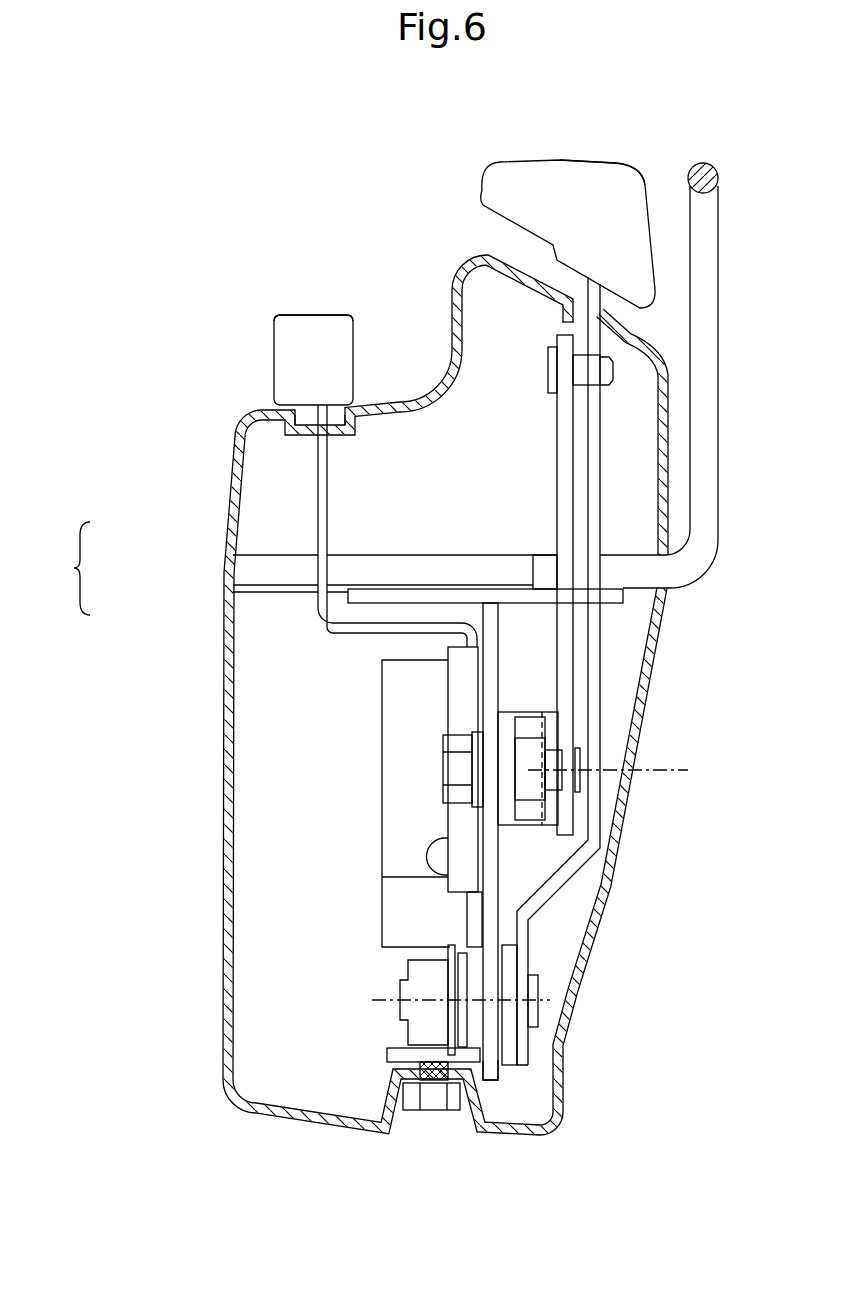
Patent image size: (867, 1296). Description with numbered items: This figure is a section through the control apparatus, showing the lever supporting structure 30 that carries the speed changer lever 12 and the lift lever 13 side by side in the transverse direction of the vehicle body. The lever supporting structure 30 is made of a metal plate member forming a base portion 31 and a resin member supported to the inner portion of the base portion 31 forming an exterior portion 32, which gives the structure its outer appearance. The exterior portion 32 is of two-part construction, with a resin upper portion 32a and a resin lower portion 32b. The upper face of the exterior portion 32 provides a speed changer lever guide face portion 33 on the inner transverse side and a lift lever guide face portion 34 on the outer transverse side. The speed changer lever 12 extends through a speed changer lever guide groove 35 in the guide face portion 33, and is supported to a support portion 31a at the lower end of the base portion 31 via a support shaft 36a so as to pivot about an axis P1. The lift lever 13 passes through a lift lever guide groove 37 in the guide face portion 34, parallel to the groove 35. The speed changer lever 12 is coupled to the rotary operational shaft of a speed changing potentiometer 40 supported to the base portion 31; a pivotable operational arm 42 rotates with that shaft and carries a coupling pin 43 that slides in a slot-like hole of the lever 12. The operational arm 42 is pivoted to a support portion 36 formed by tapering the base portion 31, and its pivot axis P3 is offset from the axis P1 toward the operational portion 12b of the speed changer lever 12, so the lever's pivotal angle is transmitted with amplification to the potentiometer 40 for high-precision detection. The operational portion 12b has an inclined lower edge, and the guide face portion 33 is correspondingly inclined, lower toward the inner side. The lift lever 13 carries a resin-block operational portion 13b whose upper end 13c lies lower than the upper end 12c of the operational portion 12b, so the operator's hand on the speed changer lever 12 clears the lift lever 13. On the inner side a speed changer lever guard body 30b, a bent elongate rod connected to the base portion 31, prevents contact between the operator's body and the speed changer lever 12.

The speed changer lever 12 is at (597, 472).
The operational portion 12b is at (533, 177).
The upper end 12c is at (610, 162).
The lift lever 13 is at (323, 478).
The operational portion 13b is at (288, 312).
The upper end 13c is at (335, 312).
The lever supporting structure 30 is at (209, 893).
The speed changer lever guard body 30b is at (703, 168).
The base portion 31 is at (420, 597).
The support portion 31a is at (493, 1072).
The exterior portion 32 is at (65, 568).
The upper portion 32a is at (230, 527).
The lower portion 32b is at (227, 615).
The speed changer lever guide face portion 33 is at (523, 245).
The lift lever guide face portion 34 is at (363, 391).
The speed changer lever guide groove 35 is at (620, 300).
The support portion 36 is at (533, 720).
The support shaft 36a is at (538, 980).
The lift lever guide groove 37 is at (308, 418).
The speed changing potentiometer 40 is at (387, 770).
The operational arm 42 is at (565, 450).
The coupling pin 43 is at (613, 370).
The pivot axis P1 is at (442, 1027).
The pivot axis P3 is at (625, 770).